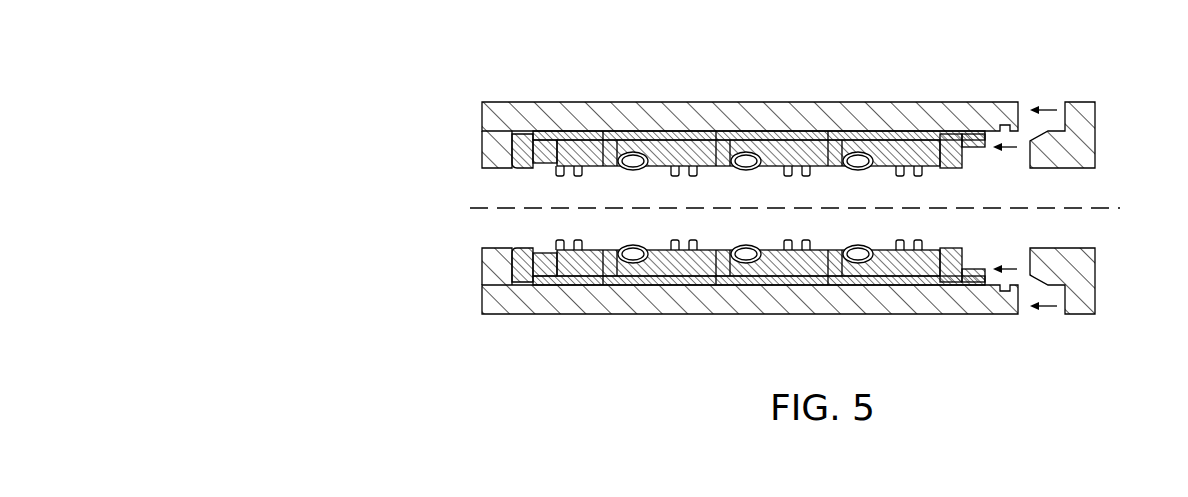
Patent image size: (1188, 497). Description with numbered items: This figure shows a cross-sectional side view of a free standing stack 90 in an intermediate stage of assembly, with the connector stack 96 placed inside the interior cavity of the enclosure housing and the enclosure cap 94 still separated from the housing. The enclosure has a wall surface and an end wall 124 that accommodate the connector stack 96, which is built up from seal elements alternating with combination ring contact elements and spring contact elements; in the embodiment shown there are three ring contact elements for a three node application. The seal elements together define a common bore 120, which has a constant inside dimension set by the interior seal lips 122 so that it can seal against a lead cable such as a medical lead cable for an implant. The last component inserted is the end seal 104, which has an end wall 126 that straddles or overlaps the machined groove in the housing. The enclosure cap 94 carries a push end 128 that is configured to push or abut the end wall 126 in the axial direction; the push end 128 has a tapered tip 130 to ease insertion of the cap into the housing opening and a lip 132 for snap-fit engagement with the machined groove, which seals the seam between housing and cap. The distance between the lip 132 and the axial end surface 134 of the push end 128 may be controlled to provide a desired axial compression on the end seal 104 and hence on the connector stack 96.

The free standing stack 90 is at (605, 97).
The enclosure cap 94 is at (1108, 112).
The connector stack 96 is at (803, 152).
The end seal 104 is at (960, 268).
The common bore 120 is at (755, 199).
The interior seal lips 122 is at (578, 170).
The end wall 124 is at (482, 137).
The end wall 126 is at (948, 156).
The push end 128 is at (1092, 157).
The tapered tip 130 is at (1033, 272).
The lip 132 is at (1095, 281).
The axial end surface 134 is at (1032, 265).